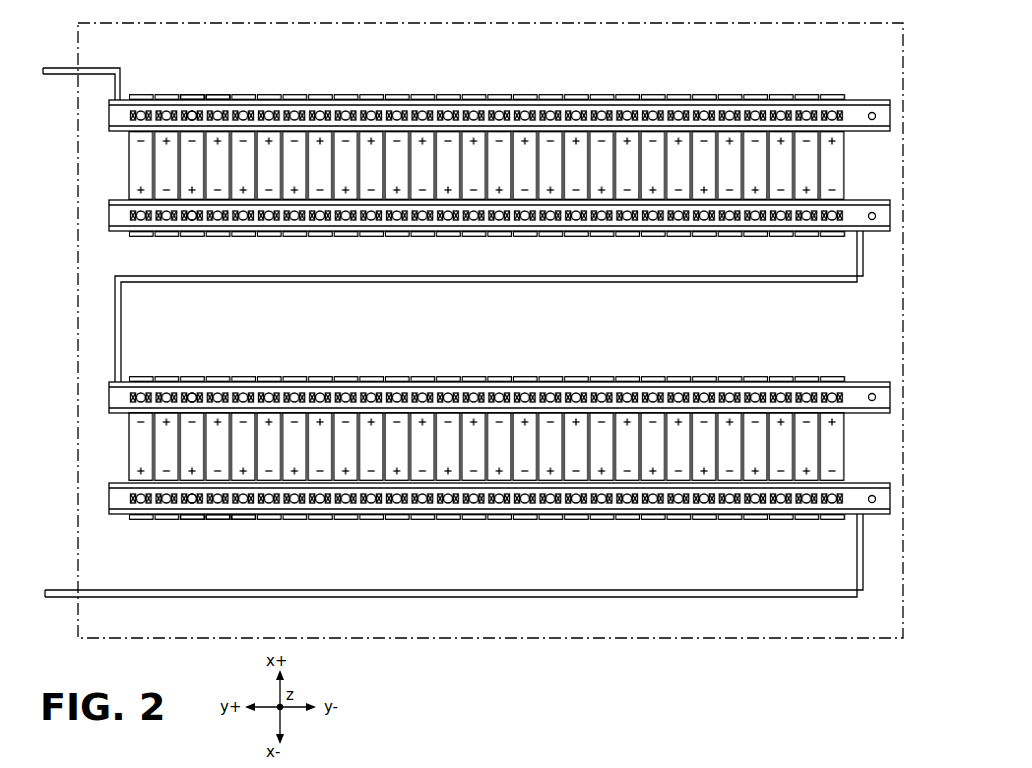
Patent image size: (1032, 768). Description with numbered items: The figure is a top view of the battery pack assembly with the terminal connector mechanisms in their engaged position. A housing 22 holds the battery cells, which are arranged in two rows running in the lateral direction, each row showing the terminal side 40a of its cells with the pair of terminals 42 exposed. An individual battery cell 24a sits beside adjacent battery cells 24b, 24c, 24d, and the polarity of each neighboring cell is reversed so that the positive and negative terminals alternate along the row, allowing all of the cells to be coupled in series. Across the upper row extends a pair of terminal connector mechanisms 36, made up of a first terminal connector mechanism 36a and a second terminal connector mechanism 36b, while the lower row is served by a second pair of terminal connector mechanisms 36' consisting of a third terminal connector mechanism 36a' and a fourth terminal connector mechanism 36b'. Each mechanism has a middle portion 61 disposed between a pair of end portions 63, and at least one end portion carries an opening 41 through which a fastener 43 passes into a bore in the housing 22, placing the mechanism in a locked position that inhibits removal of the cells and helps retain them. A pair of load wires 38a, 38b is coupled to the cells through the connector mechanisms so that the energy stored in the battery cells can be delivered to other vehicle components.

The housing 22 is at (78, 200).
The battery cell 24a is at (195, 100).
The adjacent battery cell 24b is at (168, 94).
The adjacent battery cell 24c is at (225, 95).
The battery cell 24d is at (243, 522).
The pair of terminal connector mechanisms 36 is at (502, 208).
The second pair of terminal connector mechanisms 36' is at (875, 452).
The first terminal connector mechanism 36a is at (455, 108).
The second terminal connector mechanism 36b is at (455, 224).
The third terminal connector mechanism 36a' is at (454, 397).
The fourth terminal connector mechanism 36b' is at (454, 486).
The load wire 38a is at (65, 68).
The load wire 38b is at (65, 590).
The terminal side 40a is at (200, 178).
The opening 41 is at (872, 119).
The pair of terminals 42 is at (192, 110).
The fastener 43 is at (890, 131).
The middle portion 61 is at (460, 110).
The pair of end portions 63 is at (890, 122).